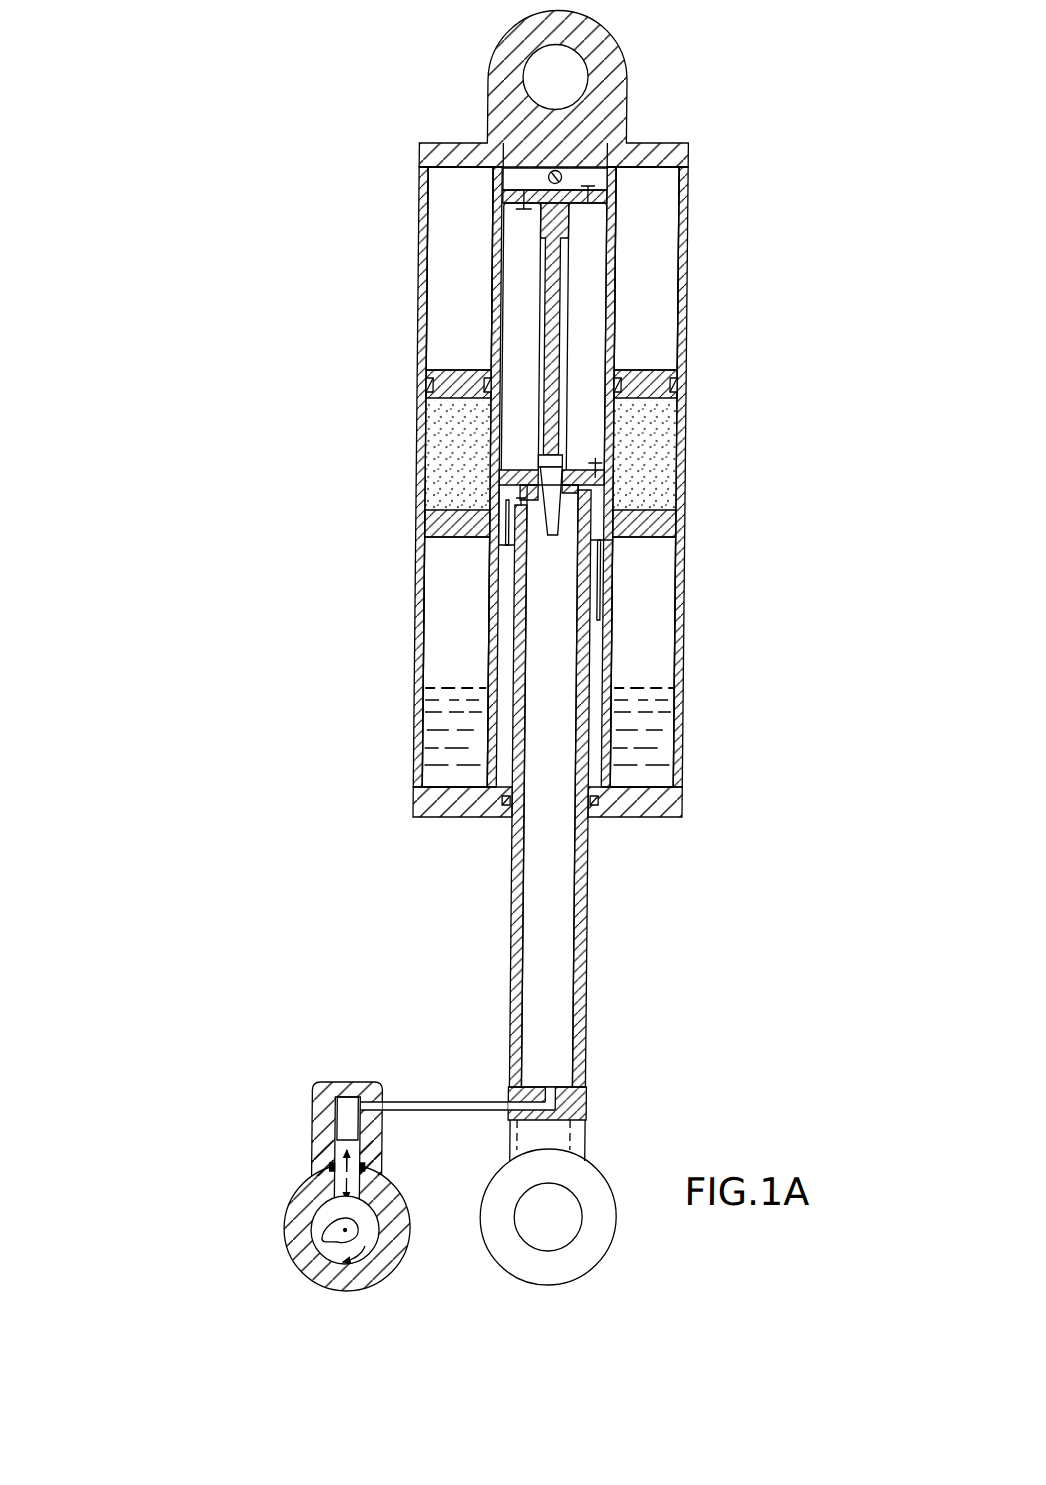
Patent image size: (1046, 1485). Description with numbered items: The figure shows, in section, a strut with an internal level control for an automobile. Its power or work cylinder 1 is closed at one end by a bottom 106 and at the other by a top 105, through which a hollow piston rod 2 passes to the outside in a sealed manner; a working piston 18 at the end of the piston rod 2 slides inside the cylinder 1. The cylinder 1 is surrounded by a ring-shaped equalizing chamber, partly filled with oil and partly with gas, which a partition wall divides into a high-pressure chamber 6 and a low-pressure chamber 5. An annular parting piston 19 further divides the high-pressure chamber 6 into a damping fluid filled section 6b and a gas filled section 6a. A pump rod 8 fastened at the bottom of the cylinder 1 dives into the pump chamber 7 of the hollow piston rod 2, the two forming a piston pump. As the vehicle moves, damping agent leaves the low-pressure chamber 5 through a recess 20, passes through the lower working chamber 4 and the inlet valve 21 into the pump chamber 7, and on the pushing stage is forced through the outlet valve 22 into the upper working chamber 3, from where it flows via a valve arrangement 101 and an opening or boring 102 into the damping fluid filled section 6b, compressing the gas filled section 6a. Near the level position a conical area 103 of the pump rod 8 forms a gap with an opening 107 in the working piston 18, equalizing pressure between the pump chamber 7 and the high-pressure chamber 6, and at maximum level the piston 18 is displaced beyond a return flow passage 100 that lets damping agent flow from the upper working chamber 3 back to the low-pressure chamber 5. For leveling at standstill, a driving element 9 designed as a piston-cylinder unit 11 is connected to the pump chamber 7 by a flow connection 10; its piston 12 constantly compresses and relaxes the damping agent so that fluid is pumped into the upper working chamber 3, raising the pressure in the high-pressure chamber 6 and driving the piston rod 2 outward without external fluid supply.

The power or work cylinder 1 is at (611, 282).
The piston rod 2 is at (592, 885).
The upper working chamber 3 is at (588, 330).
The lower working chamber 4 is at (616, 602).
The low-pressure chamber 5 is at (648, 657).
The high-pressure chamber 6 is at (656, 350).
The gas filled section 6a is at (657, 500).
The damping fluid filled section 6b is at (661, 273).
The pump chamber 7 is at (554, 952).
The pump rod 8 is at (548, 270).
The driving element 9 is at (283, 1273).
The flow connection 10 is at (451, 1098).
The piston-cylinder unit 11 is at (304, 1225).
The piston 12 is at (341, 1150).
The working piston 18 is at (600, 545).
The annular parting piston 19 is at (659, 393).
The recess 20 is at (493, 770).
The inlet valve 21 is at (525, 552).
The outlet valve 22 is at (592, 462).
The return flow passage 100 is at (616, 568).
The valve arrangement 101 is at (609, 162).
The opening or boring 102 is at (552, 172).
The conical area 103 is at (538, 484).
The top 105 is at (600, 807).
The bottom 106 is at (601, 133).
The opening 107 is at (552, 482).